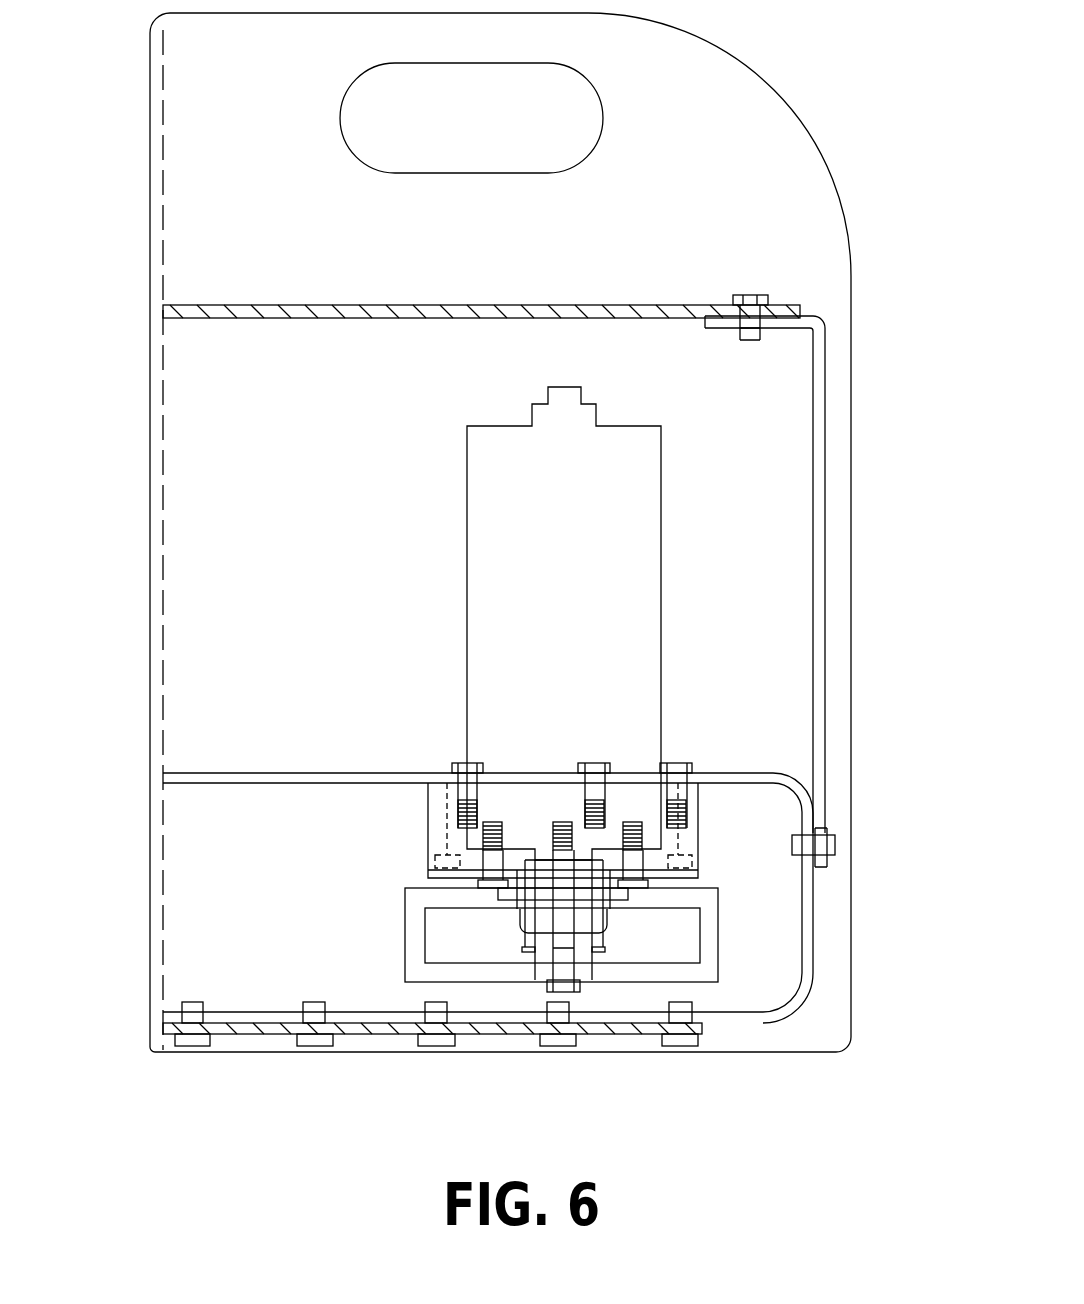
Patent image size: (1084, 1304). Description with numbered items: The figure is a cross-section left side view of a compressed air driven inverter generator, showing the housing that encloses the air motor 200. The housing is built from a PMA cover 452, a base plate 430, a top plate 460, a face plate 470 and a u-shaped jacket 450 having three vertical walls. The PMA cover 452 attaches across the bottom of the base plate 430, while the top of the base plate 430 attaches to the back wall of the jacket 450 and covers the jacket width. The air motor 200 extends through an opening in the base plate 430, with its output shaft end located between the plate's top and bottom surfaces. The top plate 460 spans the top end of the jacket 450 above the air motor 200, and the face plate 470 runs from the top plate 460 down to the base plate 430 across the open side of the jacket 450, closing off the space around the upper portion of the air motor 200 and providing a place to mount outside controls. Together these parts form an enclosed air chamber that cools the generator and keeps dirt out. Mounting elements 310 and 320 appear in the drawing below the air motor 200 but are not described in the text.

The air motor 200 is at (661, 455).
The mounting bracket 310 is at (718, 908).
The base box 320 is at (700, 935).
The base plate 430 is at (813, 938).
The jacket 450 is at (150, 575).
The PMA cover 452 is at (270, 1033).
The top plate 460 is at (673, 305).
The face plate 470 is at (832, 582).